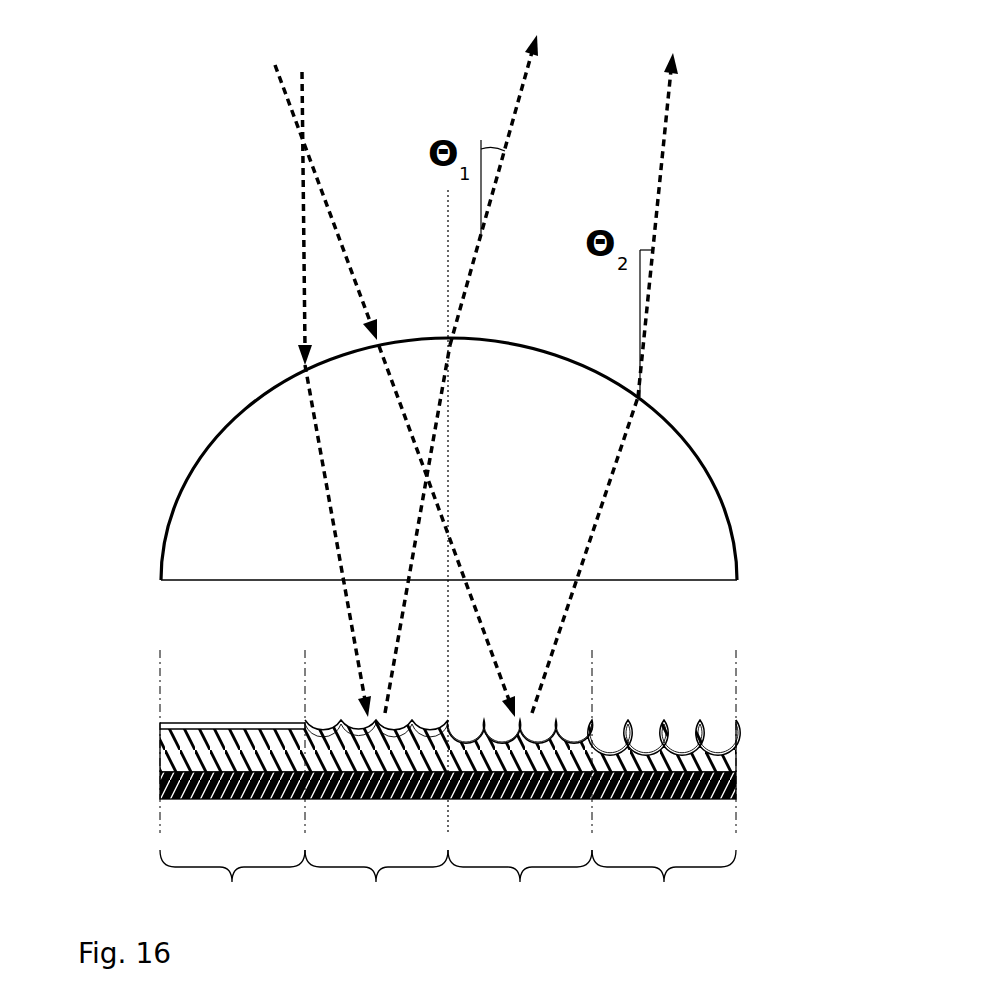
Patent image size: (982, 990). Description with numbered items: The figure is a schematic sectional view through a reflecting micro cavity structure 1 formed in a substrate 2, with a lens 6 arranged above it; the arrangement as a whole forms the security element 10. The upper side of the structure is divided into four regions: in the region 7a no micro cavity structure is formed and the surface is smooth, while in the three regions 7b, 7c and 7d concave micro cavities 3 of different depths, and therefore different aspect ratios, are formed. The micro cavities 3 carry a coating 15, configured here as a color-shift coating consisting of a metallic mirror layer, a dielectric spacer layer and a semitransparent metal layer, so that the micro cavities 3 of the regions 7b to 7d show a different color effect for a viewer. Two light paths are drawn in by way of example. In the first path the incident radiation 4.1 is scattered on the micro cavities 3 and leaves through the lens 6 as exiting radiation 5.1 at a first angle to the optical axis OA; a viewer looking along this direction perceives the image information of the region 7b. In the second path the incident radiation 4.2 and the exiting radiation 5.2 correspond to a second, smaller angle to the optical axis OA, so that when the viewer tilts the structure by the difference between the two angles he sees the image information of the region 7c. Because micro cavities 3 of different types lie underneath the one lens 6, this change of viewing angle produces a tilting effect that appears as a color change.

The micro cavity structure 1 is at (162, 745).
The substrate 2 is at (738, 783).
The micro cavities 3 is at (683, 742).
The incident radiation 4.1 is at (345, 649).
The incident radiation 4.2 is at (456, 562).
The exiting radiation 5.1 is at (422, 520).
The exiting radiation 5.2 is at (567, 606).
The lens 6 is at (233, 423).
The optical element 10 is at (132, 555).
The coating 15 is at (246, 722).
The region 7a is at (232, 890).
The region 7b is at (376, 890).
The region 7c is at (520, 890).
The region 7d is at (664, 890).
The optical axis OA is at (448, 304).